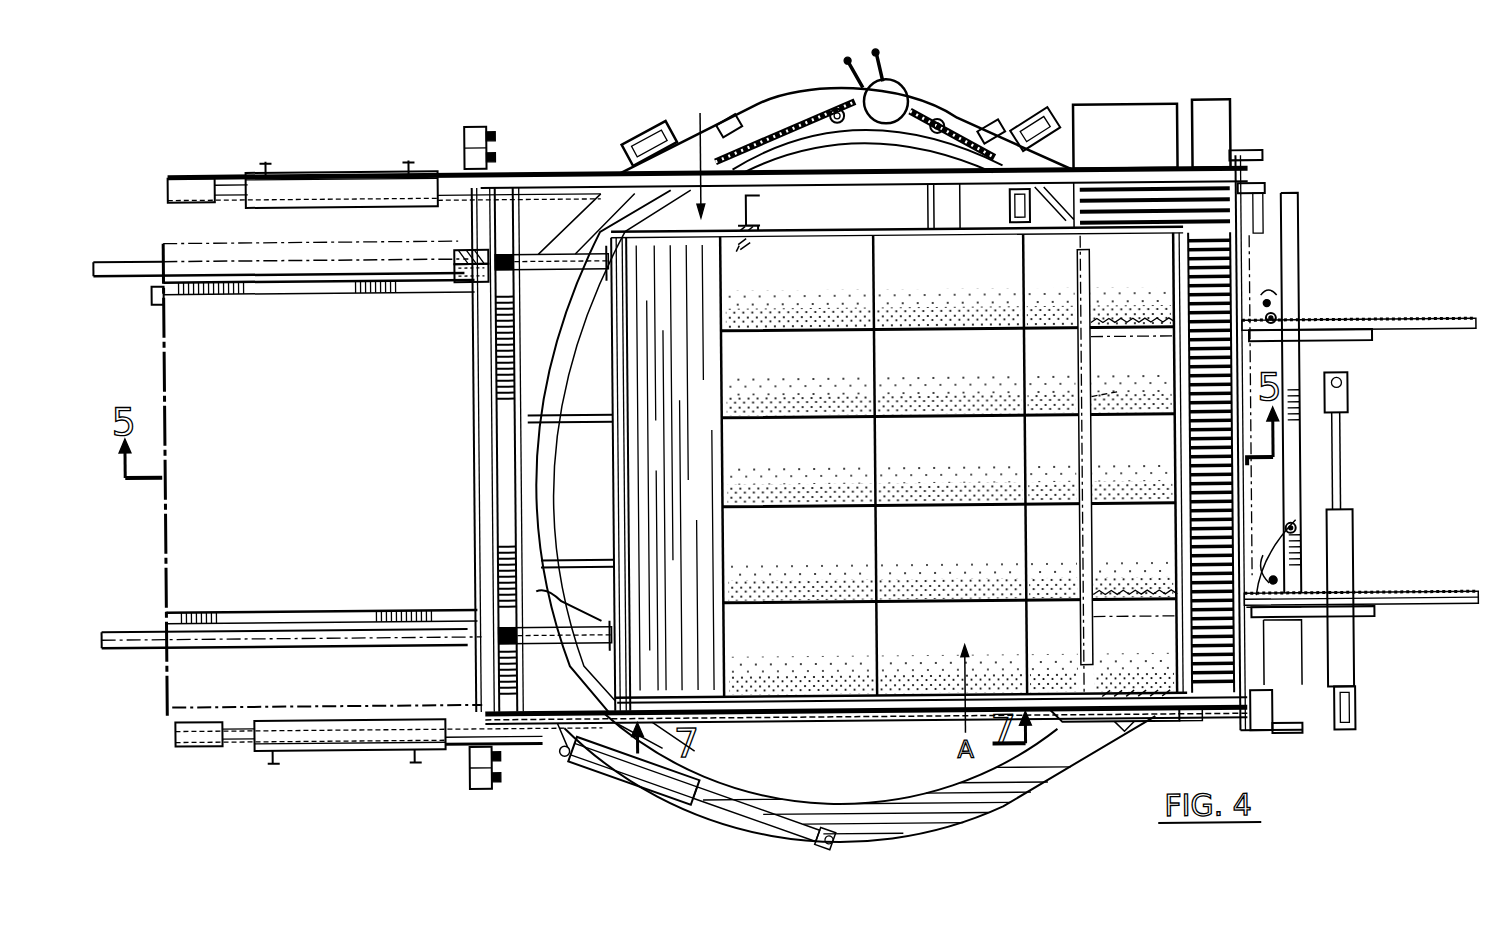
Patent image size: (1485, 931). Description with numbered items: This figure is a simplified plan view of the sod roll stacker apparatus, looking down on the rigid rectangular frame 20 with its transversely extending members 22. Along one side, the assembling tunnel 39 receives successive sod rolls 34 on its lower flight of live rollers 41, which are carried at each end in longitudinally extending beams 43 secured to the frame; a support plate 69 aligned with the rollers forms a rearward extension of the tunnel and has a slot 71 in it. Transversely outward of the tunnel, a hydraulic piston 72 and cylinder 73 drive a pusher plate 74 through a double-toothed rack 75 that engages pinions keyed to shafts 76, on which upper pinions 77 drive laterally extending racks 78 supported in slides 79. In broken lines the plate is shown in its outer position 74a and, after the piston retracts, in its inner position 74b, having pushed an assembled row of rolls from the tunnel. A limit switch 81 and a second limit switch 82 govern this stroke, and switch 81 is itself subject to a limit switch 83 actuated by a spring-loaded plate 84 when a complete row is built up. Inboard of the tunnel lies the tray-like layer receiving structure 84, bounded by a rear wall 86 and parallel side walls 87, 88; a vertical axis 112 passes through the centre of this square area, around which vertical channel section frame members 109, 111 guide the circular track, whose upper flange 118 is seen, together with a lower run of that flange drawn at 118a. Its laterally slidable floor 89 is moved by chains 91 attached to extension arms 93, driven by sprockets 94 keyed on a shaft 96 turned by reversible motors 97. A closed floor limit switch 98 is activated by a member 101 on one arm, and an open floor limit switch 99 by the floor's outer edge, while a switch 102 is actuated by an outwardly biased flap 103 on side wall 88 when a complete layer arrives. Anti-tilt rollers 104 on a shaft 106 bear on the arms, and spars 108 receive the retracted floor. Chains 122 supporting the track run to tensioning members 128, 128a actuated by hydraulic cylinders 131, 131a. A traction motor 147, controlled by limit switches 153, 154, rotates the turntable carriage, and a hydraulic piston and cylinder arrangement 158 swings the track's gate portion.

The frame 20 is at (1064, 95).
The transversely extending members 22 is at (563, 176).
The sod rolls 34 is at (1078, 727).
The assembling tunnel 39 is at (1157, 88).
The lower rollers 41 is at (1215, 200).
The longitudinally extending beams 43 is at (1070, 190).
The support plate 69 is at (1225, 115).
The slot 71 is at (1185, 112).
The hydraulic piston 72 is at (1345, 592).
The cylinder 73 is at (1342, 478).
The pusher plate 74 is at (1172, 262).
The pusher plate retracted position 74a is at (1235, 268).
The pusher plate extended position 74b is at (1098, 400).
The double-toothed rack 75 is at (1300, 462).
The shafts 76 is at (1278, 323).
The upper pinions 77 is at (1272, 303).
The laterally extending racks 78 is at (1400, 337).
The slides 79 is at (1352, 347).
The limit switch 81 is at (1274, 650).
The second limit switch 82 is at (1292, 740).
The limit switch 83 is at (1178, 727).
The layer receiving structure 84 is at (702, 150).
The rear wall 86 is at (611, 380).
The side wall 87 is at (835, 704).
The side wall 88 is at (962, 140).
The slidable floor 89 is at (168, 442).
The chains 91 is at (620, 258).
The extension arms 93 is at (118, 258).
The sprockets 94 is at (466, 296).
The shaft 96 is at (474, 440).
The reversible motors 97 is at (468, 128).
The closed floor limit switch 98 is at (458, 250).
The open floor limit switch 99 is at (152, 296).
The member 101 is at (456, 272).
The switch 102 is at (765, 212).
The flap 103 is at (750, 250).
The anti-tilt rollers 104 is at (552, 330).
The shaft 106 is at (527, 470).
The spars 108 is at (648, 122).
The channel section frame member 109 is at (1040, 118).
The channel section frame member 111 is at (1122, 737).
The vertical axis 112 is at (860, 465).
The upper flange 118 is at (808, 95).
The belt lower run 118a is at (930, 832).
The chains 122 is at (590, 195).
The tensioning member 128 is at (178, 728).
The tensioning member 128a is at (178, 180).
The hydraulic cylinder 131 is at (283, 749).
The hydraulic cylinder 131a is at (340, 172).
The traction motor 147 is at (892, 90).
The limit switch 153 is at (737, 118).
The limit switch 154 is at (994, 126).
The hydraulic piston and cylinder arrangement 158 is at (630, 770).